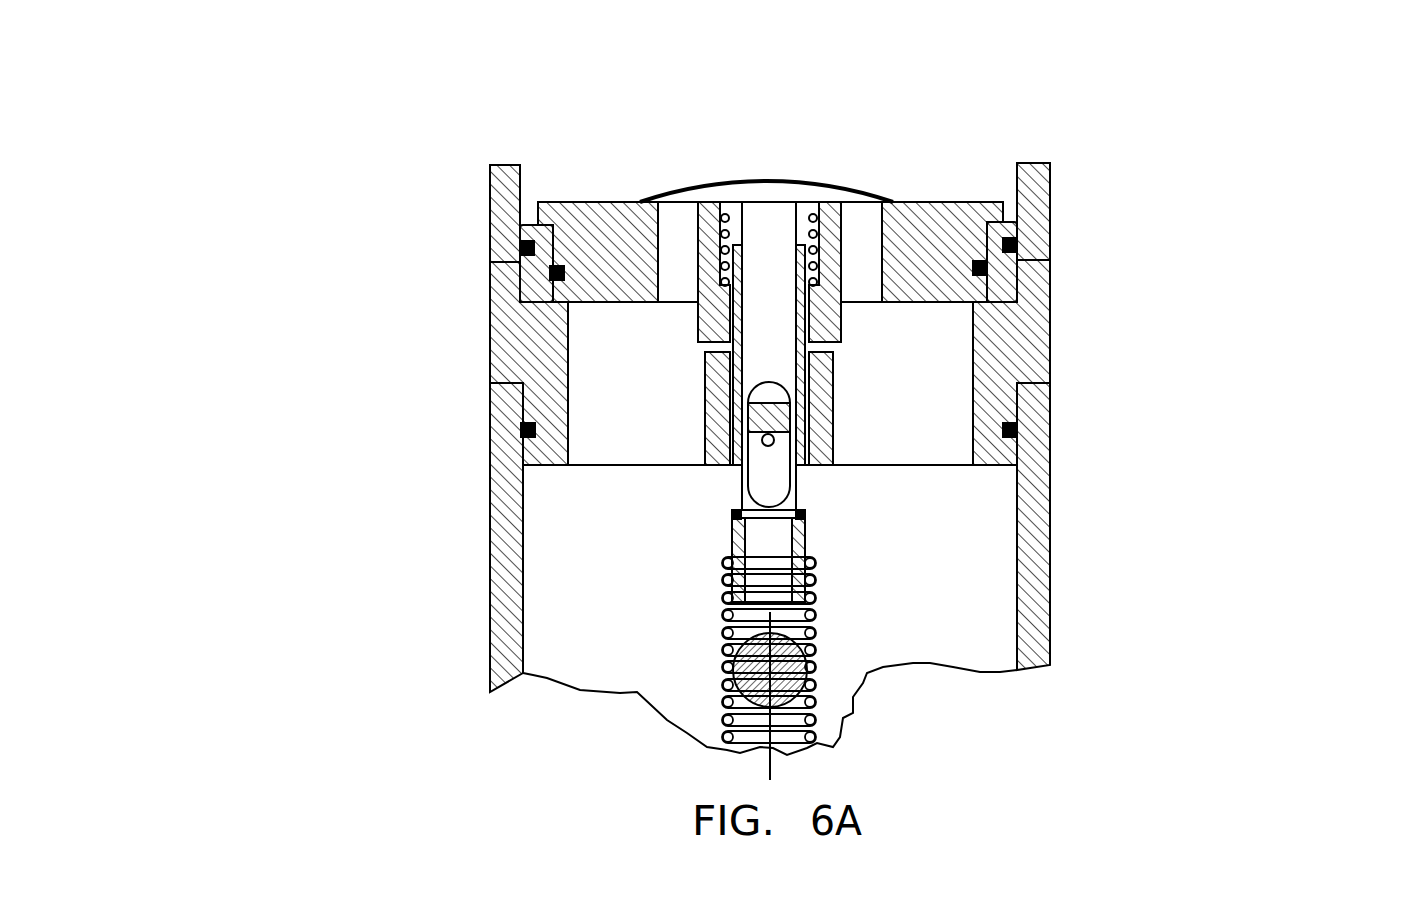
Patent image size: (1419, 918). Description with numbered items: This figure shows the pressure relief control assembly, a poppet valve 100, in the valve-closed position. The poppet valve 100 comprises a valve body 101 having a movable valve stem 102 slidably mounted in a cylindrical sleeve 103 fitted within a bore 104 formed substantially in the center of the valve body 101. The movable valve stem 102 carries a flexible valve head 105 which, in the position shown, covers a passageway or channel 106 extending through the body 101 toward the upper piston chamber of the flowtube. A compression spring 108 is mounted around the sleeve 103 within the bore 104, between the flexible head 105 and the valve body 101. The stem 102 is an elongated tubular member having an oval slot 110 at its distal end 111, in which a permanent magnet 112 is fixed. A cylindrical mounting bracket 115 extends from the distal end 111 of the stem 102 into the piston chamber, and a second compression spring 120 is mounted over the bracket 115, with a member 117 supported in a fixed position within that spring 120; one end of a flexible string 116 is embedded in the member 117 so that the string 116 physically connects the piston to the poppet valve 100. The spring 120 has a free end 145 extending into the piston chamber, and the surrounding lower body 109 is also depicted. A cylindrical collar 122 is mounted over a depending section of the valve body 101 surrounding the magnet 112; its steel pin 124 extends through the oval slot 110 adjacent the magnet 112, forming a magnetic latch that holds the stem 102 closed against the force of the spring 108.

The poppet valve 100 is at (950, 139).
The valve body 101 is at (593, 227).
The movable valve stem 102 is at (770, 227).
The cylindrical sleeve 103 is at (697, 217).
The bore 104 is at (722, 203).
The flexible valve head 105 is at (770, 183).
The passageway or channel 106 is at (868, 230).
The compression spring 108 is at (843, 186).
The lower body tube 109 is at (608, 617).
The oval slot 110 is at (772, 487).
The distal end 111 is at (757, 525).
The permanent magnet 112 is at (748, 410).
The mounting bracket 115 is at (803, 523).
The flexible string 116 is at (768, 766).
The member 117 is at (800, 577).
The compression spring 120 is at (813, 730).
The cylindrical collar 122 is at (780, 413).
The steel pin 124 is at (762, 441).
The free end 145 is at (815, 762).